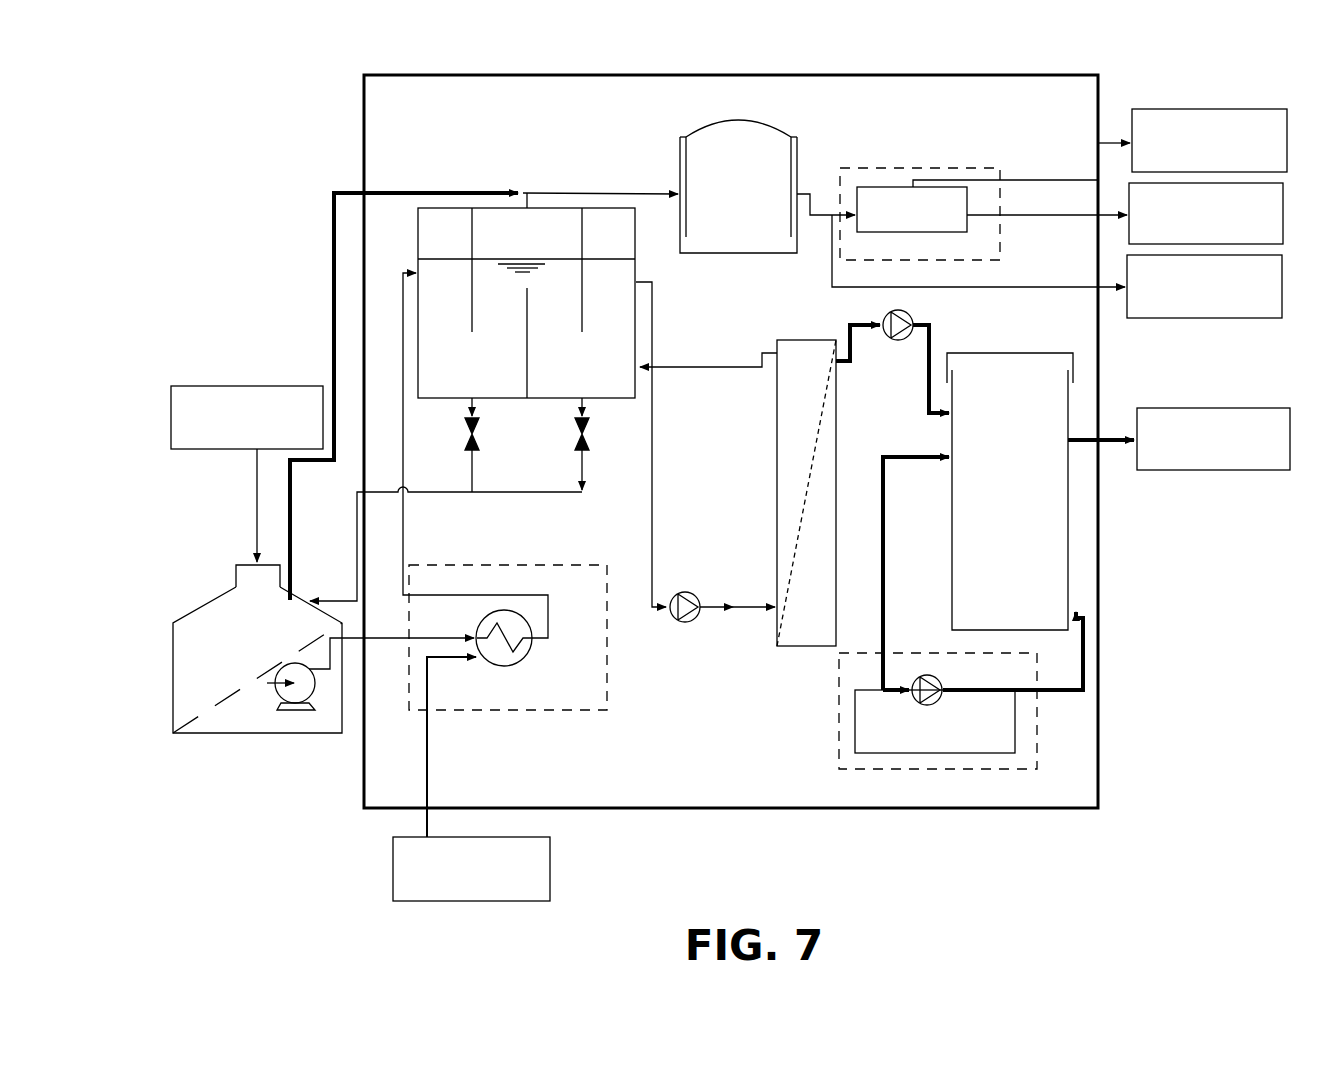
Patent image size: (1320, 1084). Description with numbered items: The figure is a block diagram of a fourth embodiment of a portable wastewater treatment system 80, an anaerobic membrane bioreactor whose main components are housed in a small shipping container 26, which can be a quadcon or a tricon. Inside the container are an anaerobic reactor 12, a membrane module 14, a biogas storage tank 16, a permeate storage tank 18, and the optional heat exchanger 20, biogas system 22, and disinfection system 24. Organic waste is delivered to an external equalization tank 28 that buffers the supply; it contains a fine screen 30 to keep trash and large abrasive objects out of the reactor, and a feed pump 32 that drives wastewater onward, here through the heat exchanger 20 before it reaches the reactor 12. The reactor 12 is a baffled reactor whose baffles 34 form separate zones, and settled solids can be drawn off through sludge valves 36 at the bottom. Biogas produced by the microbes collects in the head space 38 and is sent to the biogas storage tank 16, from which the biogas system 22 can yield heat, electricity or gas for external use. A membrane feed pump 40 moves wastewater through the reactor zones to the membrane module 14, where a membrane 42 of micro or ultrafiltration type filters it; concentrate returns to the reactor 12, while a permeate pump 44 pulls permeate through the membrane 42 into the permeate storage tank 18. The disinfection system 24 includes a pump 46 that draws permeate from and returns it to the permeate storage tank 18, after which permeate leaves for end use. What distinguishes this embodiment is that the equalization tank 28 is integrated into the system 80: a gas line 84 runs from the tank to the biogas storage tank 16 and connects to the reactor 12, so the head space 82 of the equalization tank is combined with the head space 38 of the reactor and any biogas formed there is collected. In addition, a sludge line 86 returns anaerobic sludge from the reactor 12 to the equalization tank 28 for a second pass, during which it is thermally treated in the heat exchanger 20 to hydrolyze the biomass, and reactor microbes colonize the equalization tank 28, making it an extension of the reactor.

The portable wastewater treatment system 80 is at (240, 90).
The anaerobic reactor 12 is at (519, 278).
The membrane module 14 is at (959, 491).
The biogas storage tank 16 is at (798, 125).
The permeate storage tank 18 is at (1009, 344).
The heat exchanger 20 is at (546, 699).
The biogas system 22 is at (944, 150).
The disinfection system 24 is at (906, 707).
The small shipping container 26 is at (1098, 782).
The equalization tank 28 is at (226, 676).
The fine screen 30 is at (247, 687).
The feed pump 32 is at (295, 692).
The baffles 34 is at (467, 308).
The sludge valves 36 is at (577, 443).
The head space 38 is at (521, 247).
The membrane feed pump 40 is at (683, 622).
The membrane 42 is at (798, 524).
The permeate pump 44 is at (905, 322).
The pump 46 is at (922, 678).
The head space 82 is at (257, 615).
The gas line 84 is at (333, 298).
The sludge line 86 is at (438, 493).